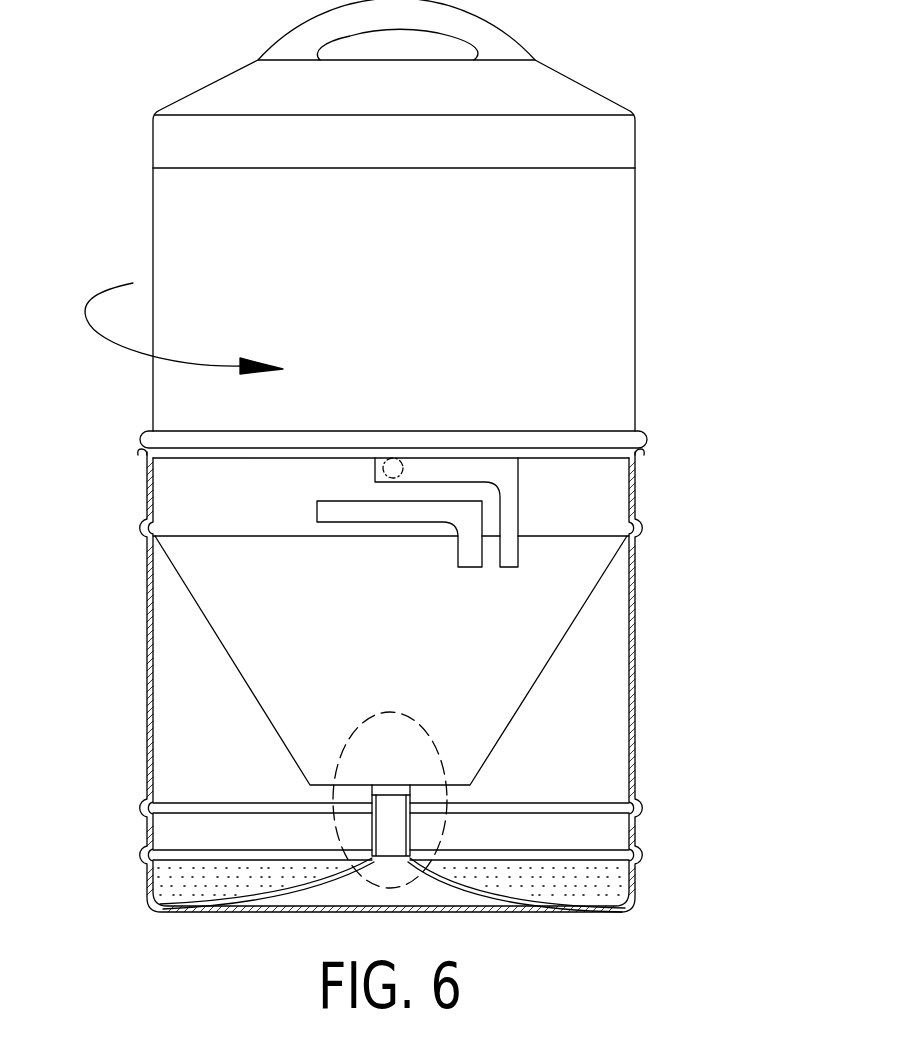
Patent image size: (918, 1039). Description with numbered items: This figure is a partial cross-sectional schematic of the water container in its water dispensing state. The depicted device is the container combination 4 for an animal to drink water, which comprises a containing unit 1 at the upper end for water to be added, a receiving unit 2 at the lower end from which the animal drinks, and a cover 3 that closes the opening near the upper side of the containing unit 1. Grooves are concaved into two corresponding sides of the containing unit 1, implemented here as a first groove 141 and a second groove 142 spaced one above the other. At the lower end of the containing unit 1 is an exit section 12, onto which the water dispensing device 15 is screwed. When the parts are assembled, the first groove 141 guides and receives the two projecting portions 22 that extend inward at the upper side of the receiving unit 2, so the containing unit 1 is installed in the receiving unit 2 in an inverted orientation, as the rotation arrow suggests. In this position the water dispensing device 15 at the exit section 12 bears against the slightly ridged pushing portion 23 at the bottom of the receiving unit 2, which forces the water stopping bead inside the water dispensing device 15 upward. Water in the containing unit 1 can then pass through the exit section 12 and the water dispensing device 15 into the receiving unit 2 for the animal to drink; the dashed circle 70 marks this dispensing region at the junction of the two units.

The containing unit 1 is at (565, 238).
The receiving unit 2 is at (632, 736).
The cover 3 is at (542, 86).
The container combination 4 is at (685, 146).
The exit section 12 is at (402, 793).
The water dispensing device 15 is at (398, 822).
The projecting portions 22 is at (388, 462).
The pushing portion 23 is at (370, 858).
The enlarged portion 70 is at (390, 776).
The first groove 141 is at (452, 472).
The second groove 142 is at (372, 512).